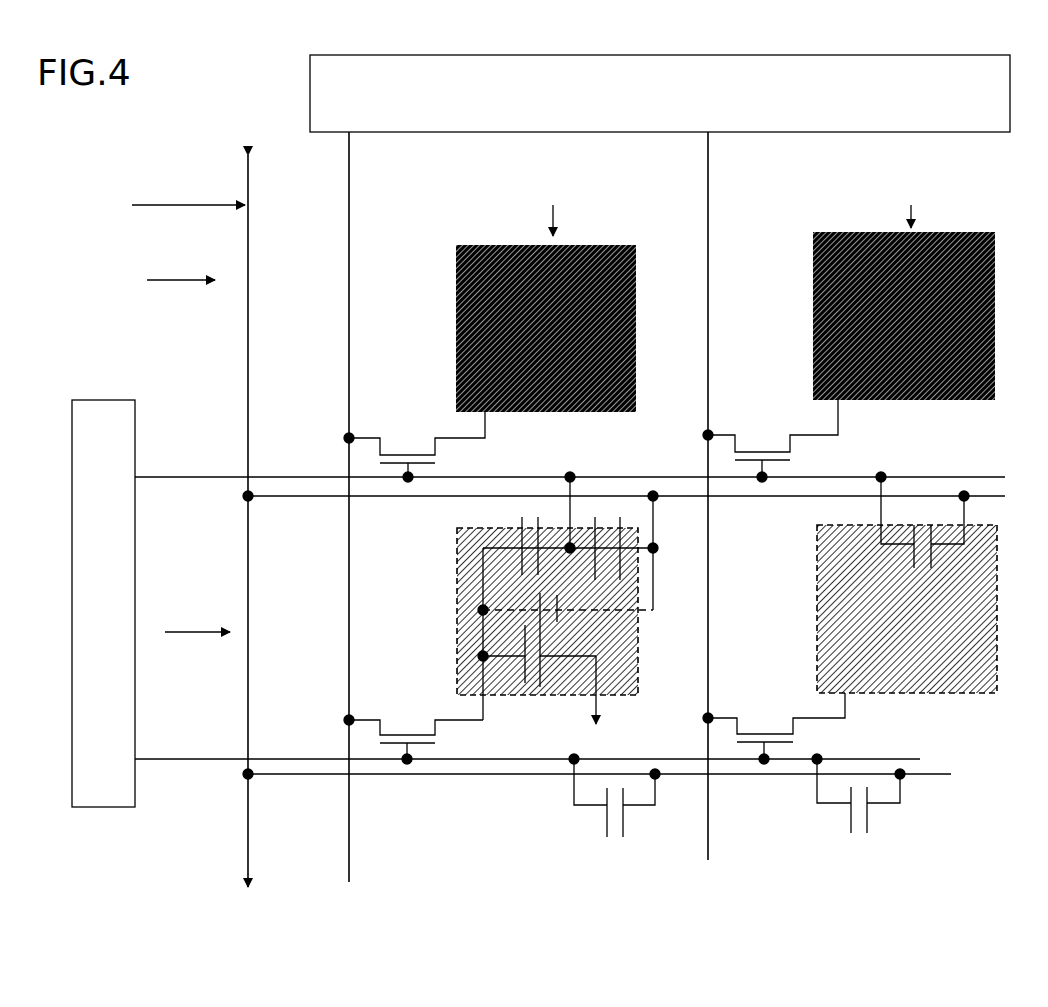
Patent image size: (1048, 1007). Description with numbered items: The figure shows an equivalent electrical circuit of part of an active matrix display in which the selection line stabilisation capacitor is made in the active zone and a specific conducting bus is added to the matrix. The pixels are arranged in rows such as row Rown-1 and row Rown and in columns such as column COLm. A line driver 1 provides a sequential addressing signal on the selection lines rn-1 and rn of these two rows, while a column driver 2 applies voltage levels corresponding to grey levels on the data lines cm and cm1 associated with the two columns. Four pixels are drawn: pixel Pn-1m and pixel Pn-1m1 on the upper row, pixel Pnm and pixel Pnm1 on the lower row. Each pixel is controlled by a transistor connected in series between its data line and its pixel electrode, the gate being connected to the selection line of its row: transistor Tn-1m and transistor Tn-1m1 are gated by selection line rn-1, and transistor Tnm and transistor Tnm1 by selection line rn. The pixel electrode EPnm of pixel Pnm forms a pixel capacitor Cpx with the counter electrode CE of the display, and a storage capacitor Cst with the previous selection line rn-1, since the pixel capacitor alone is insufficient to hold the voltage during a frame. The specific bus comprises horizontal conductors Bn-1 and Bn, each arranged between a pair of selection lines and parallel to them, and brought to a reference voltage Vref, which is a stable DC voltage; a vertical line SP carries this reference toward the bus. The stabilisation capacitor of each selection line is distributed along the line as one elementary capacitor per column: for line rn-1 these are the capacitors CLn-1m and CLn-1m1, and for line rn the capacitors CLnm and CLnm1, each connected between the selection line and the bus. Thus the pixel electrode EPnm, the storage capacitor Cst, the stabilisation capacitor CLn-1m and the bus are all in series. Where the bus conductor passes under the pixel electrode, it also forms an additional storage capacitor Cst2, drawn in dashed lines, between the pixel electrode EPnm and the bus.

The line driver 1 is at (108, 412).
The column driver 2 is at (314, 78).
The reference potential line SP is at (247, 158).
The reference voltage Vref is at (188, 192).
The row n-1 Rown-1 is at (180, 264).
The row n Rown is at (197, 618).
The data line c_m cm is at (348, 215).
The data line c_{m+1} cm1 is at (708, 210).
The column Col_m COLm is at (732, 207).
The selection line r_{n-1} rn-1 is at (181, 478).
The horizontal conductor B_{n-1} Bn-1 is at (285, 496).
The selection line r_n rn is at (188, 759).
The horizontal conductor B_n Bn is at (300, 774).
The pixel P_{n-1,m} Pn-1m is at (456, 292).
The transistor T_{n-1,m} Tn-1m is at (414, 447).
The pixel P_{n-1,m+1} Pn-1m1 is at (813, 282).
The transistor T_{n-1,m+1} Tn-1m1 is at (770, 441).
The pixel P_{n,m} Pnm is at (457, 583).
The pixel electrode EP_{n,m} EPnm is at (470, 655).
The storage capacitor C_st Cst is at (517, 558).
The stabilisation capacitor CL_{n-1,m} CLn-1m is at (591, 558).
The additional storage capacitor C_st' Cst2 is at (569, 640).
The pixel capacitor Cpx is at (539, 660).
The counter electrode CE is at (596, 704).
The transistor T_{n,m} Tnm is at (413, 733).
The pixel P_{n,m+1} Pnm1 is at (817, 578).
The stabilisation capacitor CL_{n-1,m+1} CLn-1m1 is at (921, 536).
The transistor T_{n,m+1} Tnm1 is at (774, 728).
The stabilisation capacitor CL_{n,m} CLnm is at (614, 806).
The stabilisation capacitor CL_{n,m+1} CLnm1 is at (858, 806).